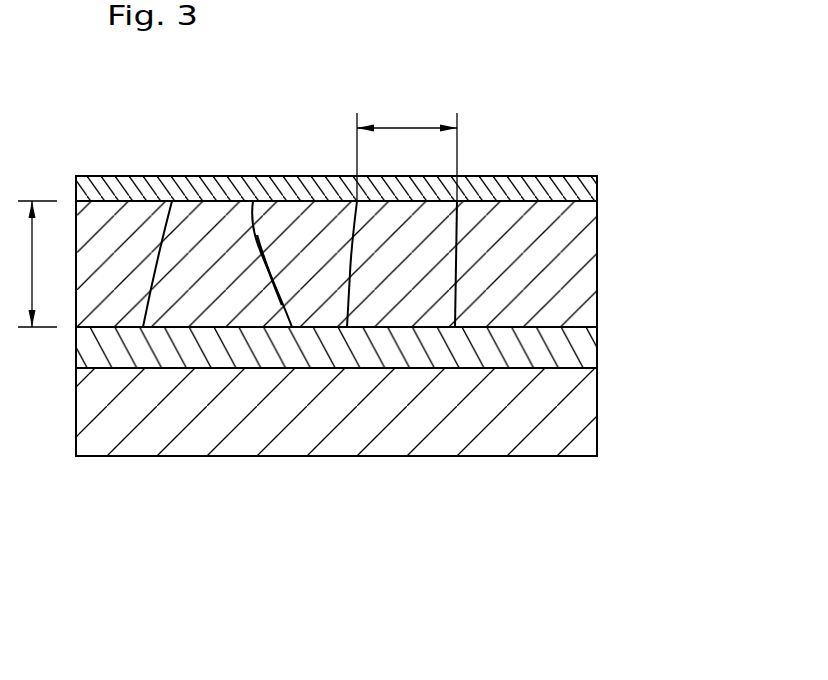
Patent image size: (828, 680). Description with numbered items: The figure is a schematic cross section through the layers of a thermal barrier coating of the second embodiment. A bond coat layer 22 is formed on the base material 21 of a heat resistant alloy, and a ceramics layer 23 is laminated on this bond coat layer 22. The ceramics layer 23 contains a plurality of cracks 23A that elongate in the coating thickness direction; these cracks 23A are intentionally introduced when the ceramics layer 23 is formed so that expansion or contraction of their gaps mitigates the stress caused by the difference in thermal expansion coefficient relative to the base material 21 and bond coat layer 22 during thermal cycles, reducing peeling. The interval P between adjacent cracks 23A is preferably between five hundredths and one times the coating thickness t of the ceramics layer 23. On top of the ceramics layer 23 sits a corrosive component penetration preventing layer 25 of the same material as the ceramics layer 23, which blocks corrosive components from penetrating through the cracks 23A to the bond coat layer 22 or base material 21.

The base material 21 is at (588, 410).
The bond coat layer 22 is at (588, 360).
The ceramics layer 23 is at (587, 275).
The cracks 23A is at (160, 263).
The corrosive component penetration preventing layer 25 is at (573, 185).
The interval between cracks P is at (407, 145).
The coating thickness t is at (32, 264).